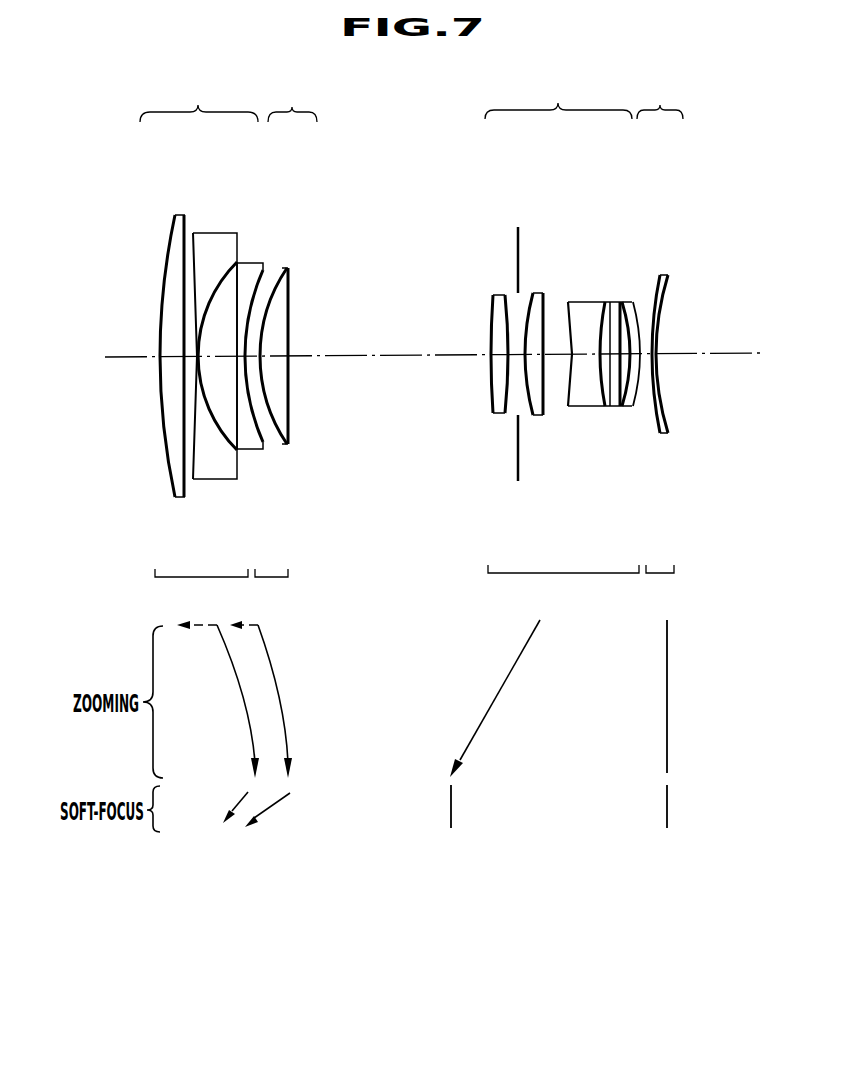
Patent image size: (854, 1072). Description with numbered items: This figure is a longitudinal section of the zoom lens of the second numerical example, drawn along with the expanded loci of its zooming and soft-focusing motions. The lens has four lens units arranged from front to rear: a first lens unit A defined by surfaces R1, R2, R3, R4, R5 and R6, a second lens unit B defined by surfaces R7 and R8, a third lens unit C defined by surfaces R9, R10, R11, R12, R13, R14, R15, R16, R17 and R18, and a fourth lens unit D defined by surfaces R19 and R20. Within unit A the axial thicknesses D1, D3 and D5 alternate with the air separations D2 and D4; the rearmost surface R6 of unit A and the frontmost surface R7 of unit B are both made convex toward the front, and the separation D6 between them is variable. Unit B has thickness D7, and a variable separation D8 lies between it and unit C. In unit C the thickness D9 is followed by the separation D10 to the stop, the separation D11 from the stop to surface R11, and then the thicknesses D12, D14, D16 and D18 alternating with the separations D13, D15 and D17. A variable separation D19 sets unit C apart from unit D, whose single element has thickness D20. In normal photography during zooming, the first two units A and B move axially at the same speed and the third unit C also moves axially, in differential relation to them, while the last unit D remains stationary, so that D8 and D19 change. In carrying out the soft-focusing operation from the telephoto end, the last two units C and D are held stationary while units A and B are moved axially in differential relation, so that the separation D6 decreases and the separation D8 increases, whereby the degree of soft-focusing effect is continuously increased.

The lens unit A is at (199, 325).
The lens unit B is at (286, 327).
The lens unit C is at (562, 323).
The lens unit D is at (660, 323).
The lens surface R1 is at (171, 240).
The lens surface R2 is at (186, 268).
The lens surface R3 is at (199, 242).
The lens surface R4 is at (221, 262).
The lens surface R5 is at (248, 264).
The lens surface R6 is at (266, 268).
The lens surface R7 is at (279, 266).
The lens surface R8 is at (295, 270).
The lens surface R9 is at (493, 297).
The lens surface R10 is at (505, 294).
The lens surface R11 is at (527, 292).
The lens surface R12 is at (547, 294).
The lens surface R13 is at (568, 300).
The lens surface R14 is at (603, 300).
The lens surface R15 is at (610, 300).
The lens surface R16 is at (620, 300).
The lens surface R17 is at (636, 300).
The lens surface R18 is at (641, 285).
The lens surface R19 is at (657, 272).
The lens surface R20 is at (667, 287).
The axial thickness D1 is at (178, 364).
The axial separation D2 is at (192, 366).
The axial thickness D3 is at (202, 366).
The axial separation D4 is at (208, 370).
The axial thickness D5 is at (240, 366).
The variable separation D6 is at (256, 368).
The axial thickness D7 is at (280, 368).
The variable separation D8 is at (384, 358).
The axial thickness D9 is at (497, 362).
The axial separation D10 is at (512, 362).
The axial separation D11 is at (522, 362).
The axial thickness D12 is at (532, 362).
The axial separation D13 is at (556, 362).
The axial thickness D14 is at (582, 362).
The axial separation D15 is at (603, 362).
The axial thickness D16 is at (612, 362).
The axial separation D17 is at (624, 362).
The axial thickness D18 is at (633, 365).
The variable separation D19 is at (647, 365).
The axial thickness D20 is at (660, 366).